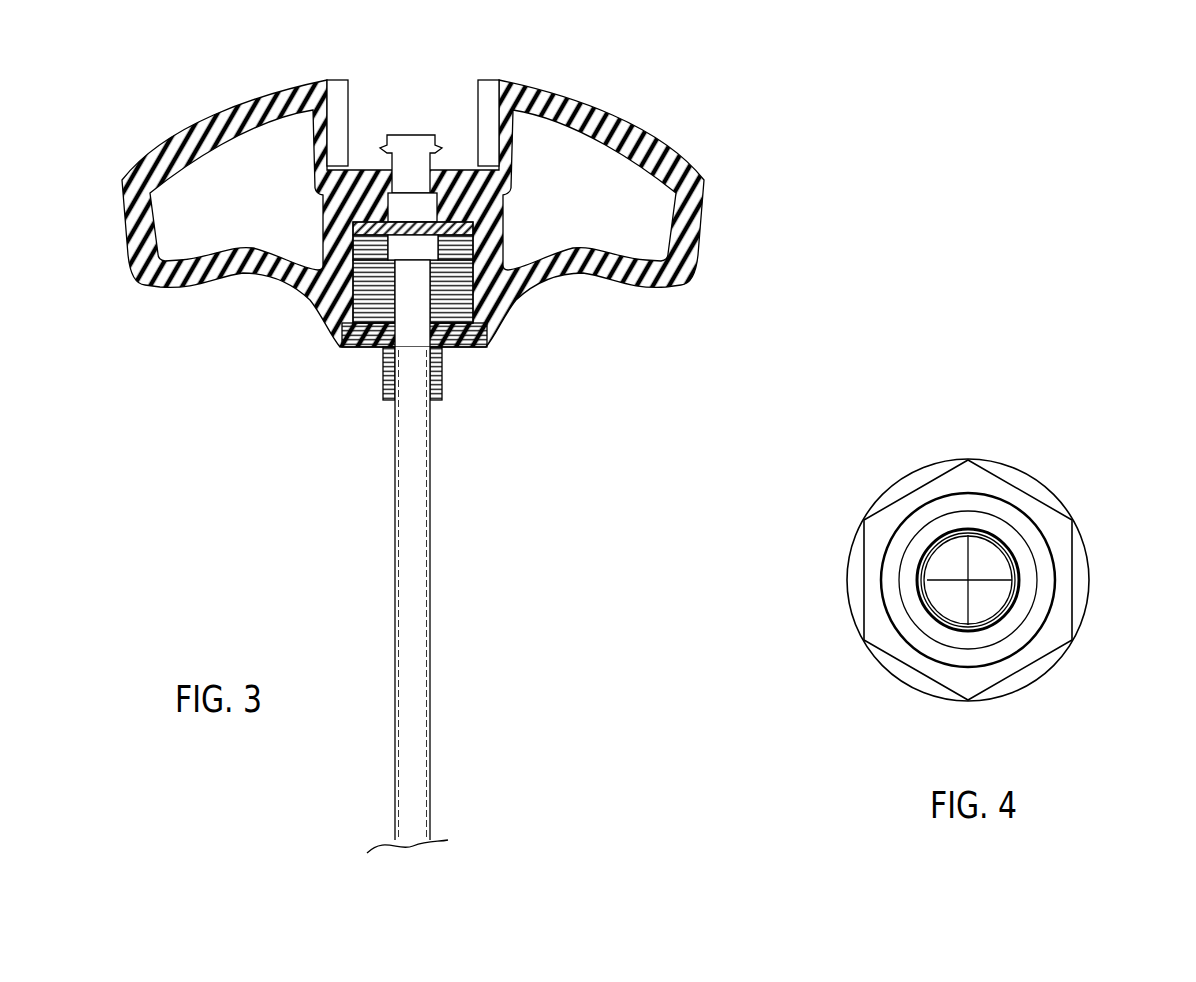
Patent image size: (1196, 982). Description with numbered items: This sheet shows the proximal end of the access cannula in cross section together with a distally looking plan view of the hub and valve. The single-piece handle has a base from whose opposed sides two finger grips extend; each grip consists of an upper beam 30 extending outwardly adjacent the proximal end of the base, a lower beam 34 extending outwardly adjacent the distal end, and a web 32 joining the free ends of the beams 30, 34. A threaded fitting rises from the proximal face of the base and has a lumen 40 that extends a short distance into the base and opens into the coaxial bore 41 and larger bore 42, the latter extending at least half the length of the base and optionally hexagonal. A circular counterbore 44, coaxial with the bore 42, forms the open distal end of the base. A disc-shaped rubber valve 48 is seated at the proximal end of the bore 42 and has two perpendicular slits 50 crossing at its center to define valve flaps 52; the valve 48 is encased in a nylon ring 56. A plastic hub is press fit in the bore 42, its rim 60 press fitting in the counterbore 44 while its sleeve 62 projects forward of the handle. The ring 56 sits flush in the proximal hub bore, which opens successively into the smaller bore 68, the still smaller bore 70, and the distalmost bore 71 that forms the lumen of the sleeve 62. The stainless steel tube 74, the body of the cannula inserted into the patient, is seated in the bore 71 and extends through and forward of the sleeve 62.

In FIG. 3, the beam 30 is at (217, 115).
In FIG. 3, the web 32 is at (127, 247).
In FIG. 3, the beam 34 is at (182, 288).
In FIG. 3, the lumen 40 is at (410, 155).
In FIG. 3, the bore 41 is at (413, 210).
In FIG. 3, the bore 42 is at (473, 260).
In FIG. 3, the counterbore 44 is at (500, 338).
In FIG. 3, the valve 48 is at (470, 215).
In FIG. 4, the slits 50 is at (995, 580).
In FIG. 4, the valve flaps 52 is at (995, 600).
In FIG. 4, the ring 56 is at (1025, 533).
In FIG. 4, the rim 60 is at (848, 582).
In FIG. 3, the sleeve 62 is at (440, 370).
In FIG. 3, the bore 68 is at (413, 248).
In FIG. 3, the bore 70 is at (413, 287).
In FIG. 3, the bore 71 is at (385, 370).
In FIG. 3, the tube 74 is at (432, 545).